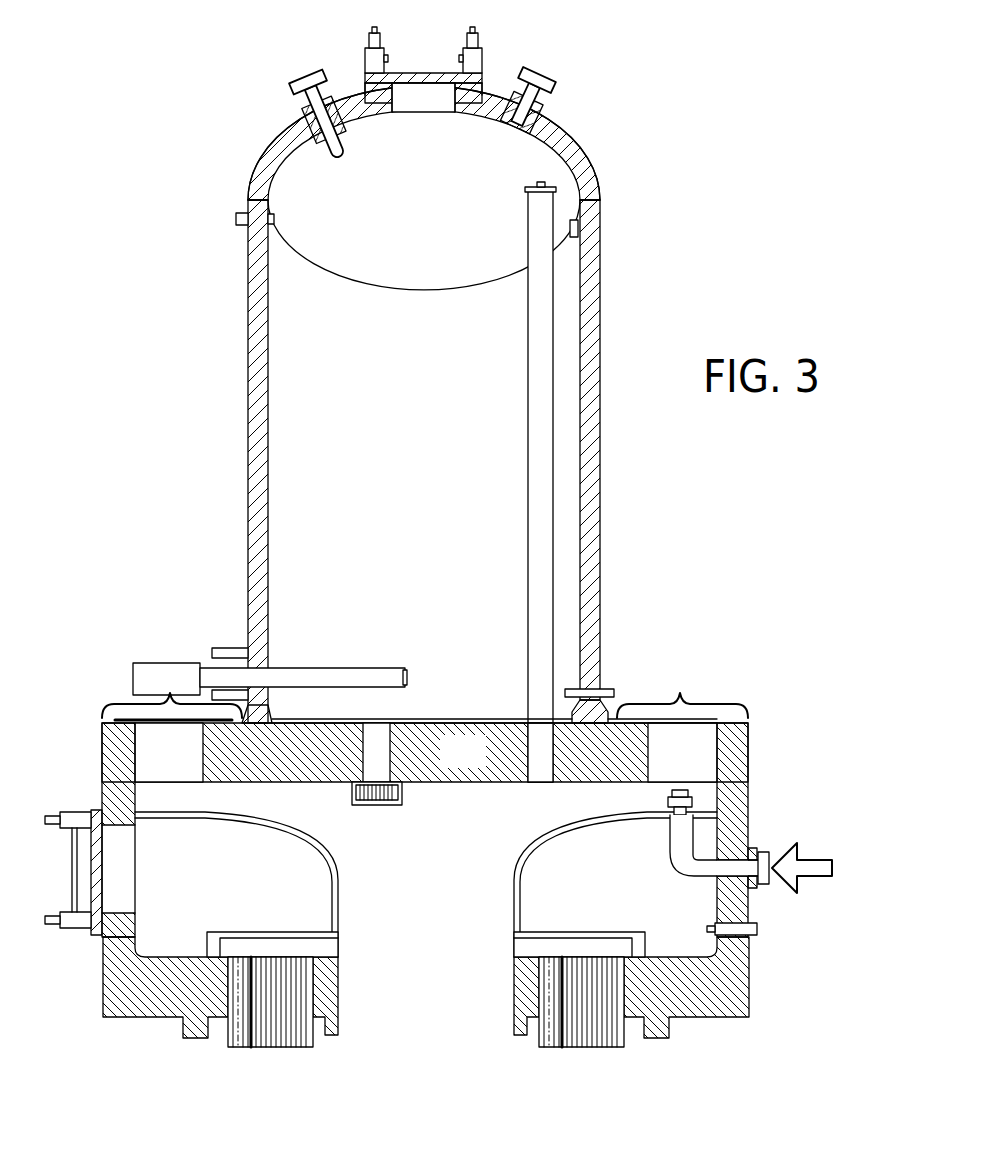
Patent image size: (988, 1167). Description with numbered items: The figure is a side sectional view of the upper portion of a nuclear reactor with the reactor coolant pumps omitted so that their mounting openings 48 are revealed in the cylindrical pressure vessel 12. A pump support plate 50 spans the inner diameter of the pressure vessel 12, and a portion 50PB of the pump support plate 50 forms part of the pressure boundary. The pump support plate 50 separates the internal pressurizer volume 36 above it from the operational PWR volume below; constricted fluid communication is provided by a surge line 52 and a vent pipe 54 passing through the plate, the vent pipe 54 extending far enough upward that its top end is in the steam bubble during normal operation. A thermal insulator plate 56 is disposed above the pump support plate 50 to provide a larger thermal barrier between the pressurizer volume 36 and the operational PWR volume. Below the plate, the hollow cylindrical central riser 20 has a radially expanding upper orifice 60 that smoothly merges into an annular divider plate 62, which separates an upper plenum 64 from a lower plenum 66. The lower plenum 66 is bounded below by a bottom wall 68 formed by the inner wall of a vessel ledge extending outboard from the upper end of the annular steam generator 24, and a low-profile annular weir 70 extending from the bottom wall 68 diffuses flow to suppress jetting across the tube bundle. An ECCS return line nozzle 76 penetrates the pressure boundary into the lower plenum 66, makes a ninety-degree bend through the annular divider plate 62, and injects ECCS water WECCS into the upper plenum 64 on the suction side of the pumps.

The pressure vessel 12 is at (753, 960).
The central riser 20 is at (445, 1020).
The annular steam generator 24 is at (280, 1048).
The pressurizer volume 36 is at (434, 397).
The openings 48 is at (181, 765).
The pump support plate 50 is at (478, 767).
The portion of the pump support plate 50PB is at (737, 598).
The surge line 52 is at (398, 800).
The vent pipe 54 is at (525, 310).
The thermal insulator plate 56 is at (493, 718).
The radially expanding upper orifice 60 is at (283, 817).
The annular divider plate 62 is at (200, 818).
The upper plenum 64 is at (579, 815).
The lower plenum 66 is at (626, 886).
The bottom wall 68 is at (697, 952).
The annular weir 70 is at (247, 930).
The ECCS return line nozzle 76 is at (681, 796).
The ECCS water WECCS is at (817, 854).